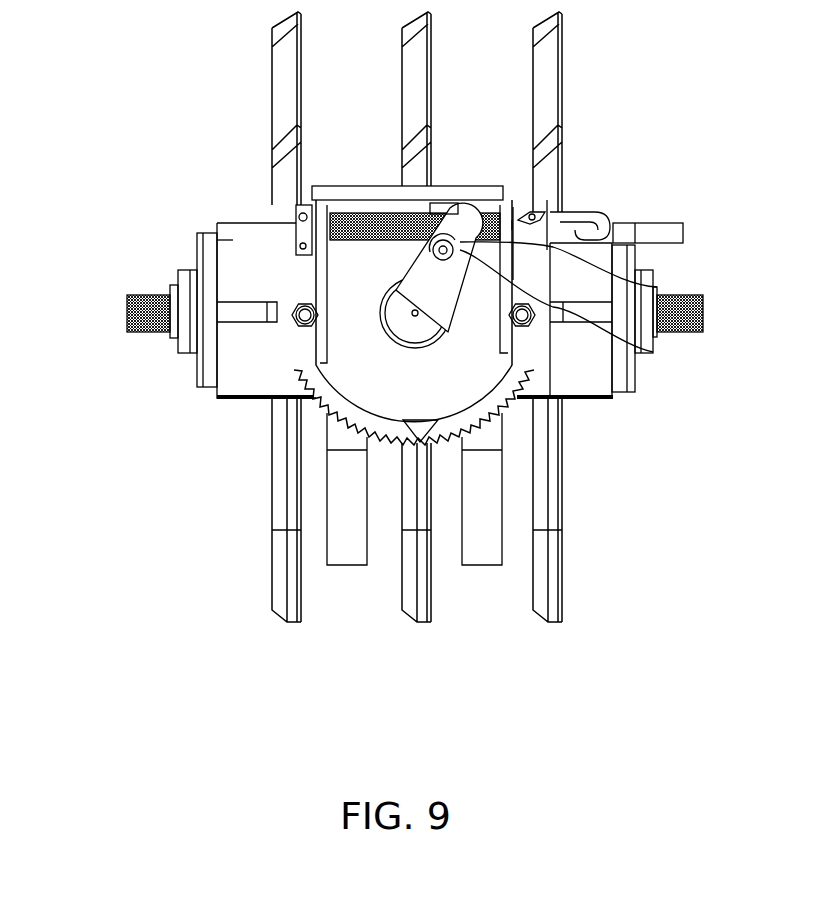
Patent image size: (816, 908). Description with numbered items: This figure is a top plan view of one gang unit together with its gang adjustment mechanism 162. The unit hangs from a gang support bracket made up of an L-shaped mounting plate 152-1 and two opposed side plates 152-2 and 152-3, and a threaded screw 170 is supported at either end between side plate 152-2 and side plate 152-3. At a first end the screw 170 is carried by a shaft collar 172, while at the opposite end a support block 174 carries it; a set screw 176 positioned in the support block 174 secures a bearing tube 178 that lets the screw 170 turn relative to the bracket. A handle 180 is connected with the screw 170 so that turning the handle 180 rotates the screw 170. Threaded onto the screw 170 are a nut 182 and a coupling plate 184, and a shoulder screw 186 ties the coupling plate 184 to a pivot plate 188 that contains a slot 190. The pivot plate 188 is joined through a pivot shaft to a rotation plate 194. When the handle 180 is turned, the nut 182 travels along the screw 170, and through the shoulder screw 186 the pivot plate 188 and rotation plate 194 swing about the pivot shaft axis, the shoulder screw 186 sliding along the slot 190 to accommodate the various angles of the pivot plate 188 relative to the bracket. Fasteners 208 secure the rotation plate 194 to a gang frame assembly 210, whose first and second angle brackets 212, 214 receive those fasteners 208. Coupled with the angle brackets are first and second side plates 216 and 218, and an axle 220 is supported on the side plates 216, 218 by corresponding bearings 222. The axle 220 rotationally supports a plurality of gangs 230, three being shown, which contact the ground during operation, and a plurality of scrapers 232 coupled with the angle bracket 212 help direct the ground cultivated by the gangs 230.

The L-shaped mounting plate 152-1 is at (360, 197).
The side plate 152-2 is at (320, 270).
The side plate 152-3 is at (512, 222).
The gang adjustment mechanism 162 is at (418, 357).
The threaded screw 170 is at (348, 230).
The shaft collar 172 is at (298, 212).
The support block 174 is at (540, 205).
The set screw 176 is at (528, 200).
The bearing tube 178 is at (657, 287).
The handle 180 is at (657, 222).
The nut 182 is at (440, 203).
The coupling plate 184 is at (448, 205).
The shoulder screw 186 is at (653, 352).
The pivot plate 188 is at (405, 313).
The slot 190 is at (707, 313).
The rotation plate 194 is at (320, 400).
The fasteners 208 is at (303, 327).
The gang frame assembly 210 is at (180, 248).
The first angle bracket 212 is at (247, 383).
The second angle bracket 214 is at (233, 240).
The first side plate 216 is at (210, 390).
The second side plate 218 is at (613, 400).
The axle 220 is at (133, 332).
The bearings 222 is at (180, 270).
The gangs 230 is at (277, 632).
The scrapers 232 is at (350, 578).